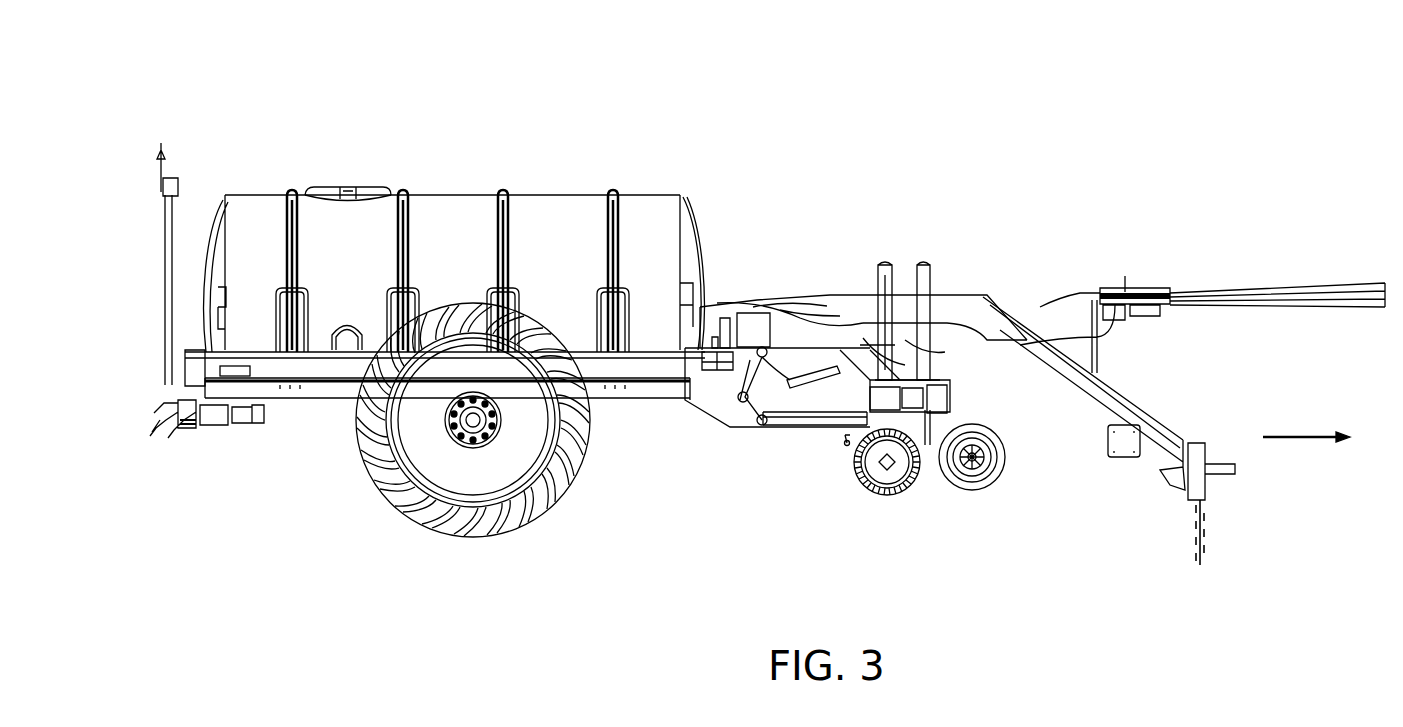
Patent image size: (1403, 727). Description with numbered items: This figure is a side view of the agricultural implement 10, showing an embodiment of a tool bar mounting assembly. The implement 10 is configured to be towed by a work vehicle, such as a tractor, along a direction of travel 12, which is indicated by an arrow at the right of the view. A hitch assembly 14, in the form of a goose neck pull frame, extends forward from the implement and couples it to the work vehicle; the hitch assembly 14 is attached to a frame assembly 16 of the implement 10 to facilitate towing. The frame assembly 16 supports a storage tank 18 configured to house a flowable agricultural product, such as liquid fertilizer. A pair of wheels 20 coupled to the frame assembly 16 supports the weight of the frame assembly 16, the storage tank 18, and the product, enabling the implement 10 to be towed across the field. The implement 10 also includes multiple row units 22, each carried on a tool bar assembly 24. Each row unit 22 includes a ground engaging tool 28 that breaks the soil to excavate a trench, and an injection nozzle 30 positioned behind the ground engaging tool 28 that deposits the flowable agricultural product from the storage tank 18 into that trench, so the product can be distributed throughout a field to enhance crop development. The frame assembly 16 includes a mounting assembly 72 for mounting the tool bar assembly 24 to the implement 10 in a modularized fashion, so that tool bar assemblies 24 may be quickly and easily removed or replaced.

The agricultural implement 10 is at (1134, 101).
The direction of travel 12 is at (1300, 437).
The hitch assembly 14 is at (843, 296).
The frame assembly 16 is at (191, 370).
The storage tank 18 is at (257, 210).
The wheels 20 is at (473, 535).
The row units 22 is at (1002, 496).
The tool bar assembly 24 is at (963, 377).
The ground engaging tool 28 is at (872, 500).
The injection nozzle 30 is at (845, 447).
The mounting assembly 72 is at (712, 487).